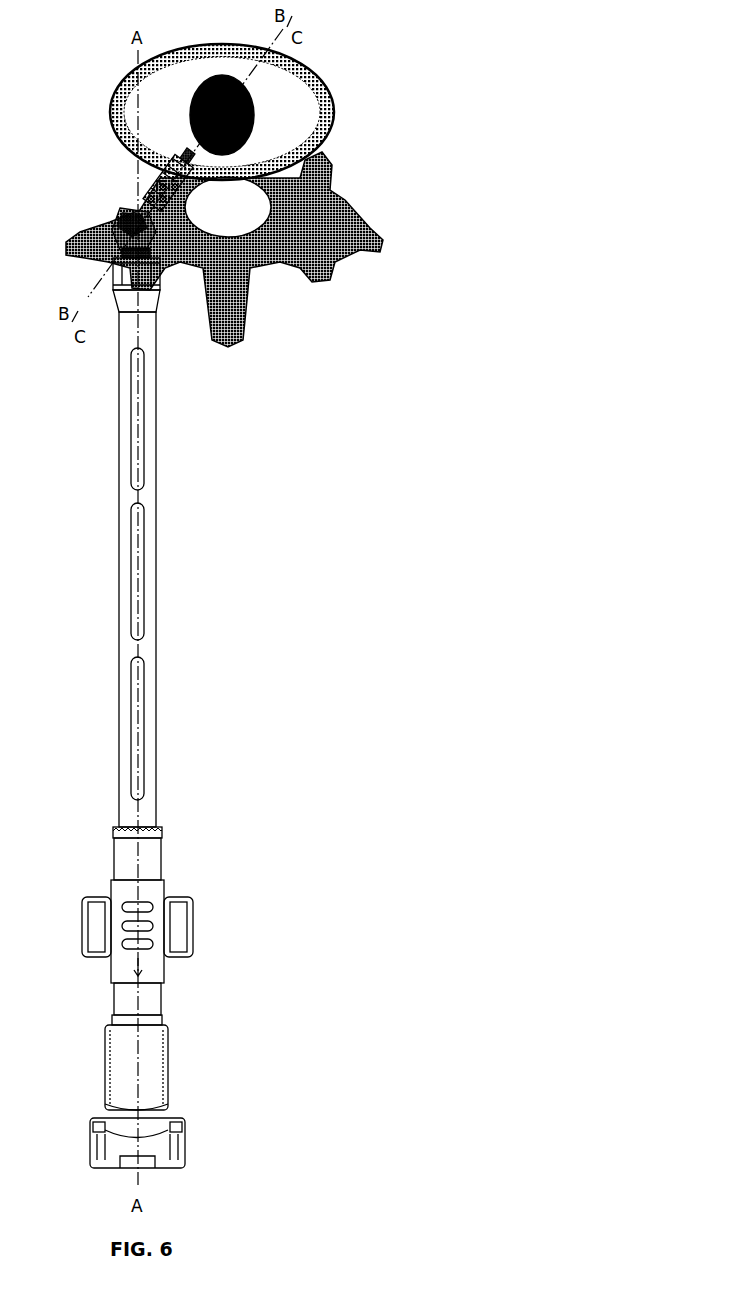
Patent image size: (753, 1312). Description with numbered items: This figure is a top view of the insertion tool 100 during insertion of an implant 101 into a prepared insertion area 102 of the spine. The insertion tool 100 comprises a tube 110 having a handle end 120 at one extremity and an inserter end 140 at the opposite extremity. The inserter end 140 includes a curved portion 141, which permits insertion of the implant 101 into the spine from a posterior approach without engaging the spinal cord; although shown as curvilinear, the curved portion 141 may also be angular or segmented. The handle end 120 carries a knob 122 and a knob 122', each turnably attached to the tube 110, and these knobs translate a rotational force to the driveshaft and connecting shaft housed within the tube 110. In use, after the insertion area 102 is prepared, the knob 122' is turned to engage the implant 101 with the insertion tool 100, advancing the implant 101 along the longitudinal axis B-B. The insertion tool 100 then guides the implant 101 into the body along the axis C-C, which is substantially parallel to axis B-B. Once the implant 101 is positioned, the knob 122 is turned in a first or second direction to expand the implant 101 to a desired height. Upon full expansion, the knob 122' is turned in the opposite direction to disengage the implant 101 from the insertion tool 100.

The insertion tool 100 is at (155, 650).
The implant 101 is at (254, 128).
The insertion area 102 is at (316, 94).
The tube 110 is at (120, 648).
The handle end 120 is at (155, 997).
The knob 122 is at (185, 927).
The knob 122' is at (185, 1096).
The inserter end 140 is at (156, 212).
The curved portion 141 is at (177, 231).